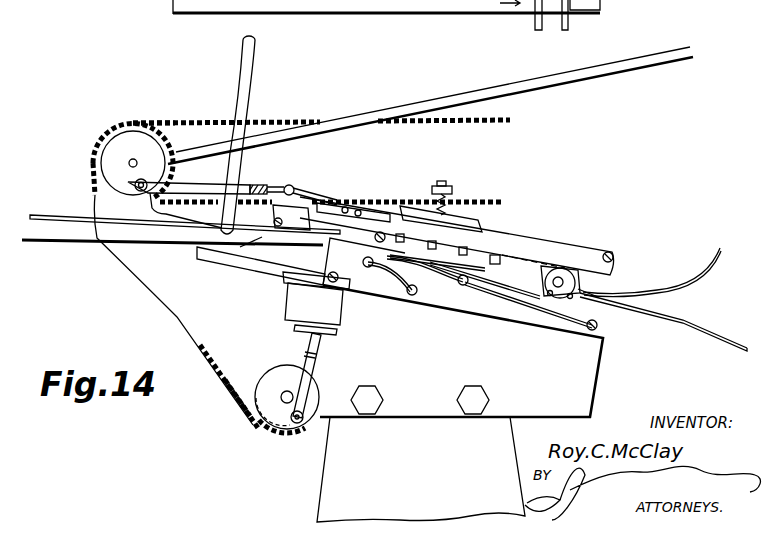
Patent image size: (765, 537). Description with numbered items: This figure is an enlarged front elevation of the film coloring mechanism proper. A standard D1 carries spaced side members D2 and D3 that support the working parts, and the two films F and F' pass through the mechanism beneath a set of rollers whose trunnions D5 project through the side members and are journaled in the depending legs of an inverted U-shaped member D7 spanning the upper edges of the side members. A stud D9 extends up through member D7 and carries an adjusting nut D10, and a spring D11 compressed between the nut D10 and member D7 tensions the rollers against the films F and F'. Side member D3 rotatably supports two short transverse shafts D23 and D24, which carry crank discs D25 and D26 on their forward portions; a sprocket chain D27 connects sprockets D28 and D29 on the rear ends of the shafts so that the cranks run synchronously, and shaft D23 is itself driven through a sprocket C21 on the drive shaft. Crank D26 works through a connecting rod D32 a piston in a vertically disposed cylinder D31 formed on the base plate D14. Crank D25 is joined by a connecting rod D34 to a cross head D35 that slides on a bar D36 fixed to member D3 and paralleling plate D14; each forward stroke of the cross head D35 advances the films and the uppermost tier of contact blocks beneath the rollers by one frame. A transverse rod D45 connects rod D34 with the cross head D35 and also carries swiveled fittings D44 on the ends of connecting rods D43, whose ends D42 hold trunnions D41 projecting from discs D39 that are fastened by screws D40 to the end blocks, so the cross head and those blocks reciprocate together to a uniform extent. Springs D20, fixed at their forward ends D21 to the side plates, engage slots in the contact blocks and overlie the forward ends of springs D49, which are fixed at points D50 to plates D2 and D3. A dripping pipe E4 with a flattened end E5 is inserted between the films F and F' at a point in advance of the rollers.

The sprocket D28 is at (110, 138).
The transverse shaft D23 is at (133, 159).
The crank disc D25 is at (167, 122).
The sprocket chain D27 is at (168, 157).
The connecting rod D34 is at (134, 180).
The film F is at (376, 235).
The film F' is at (384, 295).
The side member D2 is at (183, 300).
The base plate D14 is at (230, 260).
The cylinder D31 is at (312, 302).
The connecting rod D32 is at (305, 333).
The crank disc D26 is at (284, 368).
The transverse shaft D24 is at (293, 395).
The sprocket D29 is at (255, 410).
The dripping pipe E4 is at (255, 82).
The sprocket C21 is at (287, 120).
The transverse rod D45 is at (285, 187).
The fitting D44 is at (307, 197).
The cross head D35 is at (318, 201).
The bar D36 is at (352, 208).
The stud D9 is at (442, 181).
The adjusting nut D10 is at (436, 186).
The spring D11 is at (456, 200).
The inverted U-shaped member D7 is at (464, 220).
The connecting rod D43 is at (497, 247).
The trunnion D41 is at (559, 277).
The connecting rod end D42 is at (563, 266).
The disc D39 is at (581, 280).
The screw D40 is at (595, 295).
The forward end of spring D21 is at (598, 325).
The spring D20 is at (547, 322).
The spring D49 is at (430, 284).
The fixing point D50 is at (398, 266).
The trunnion D5 is at (388, 243).
The flattened end E5 is at (262, 237).
The side member D3 is at (461, 351).
The standard D1 is at (421, 469).